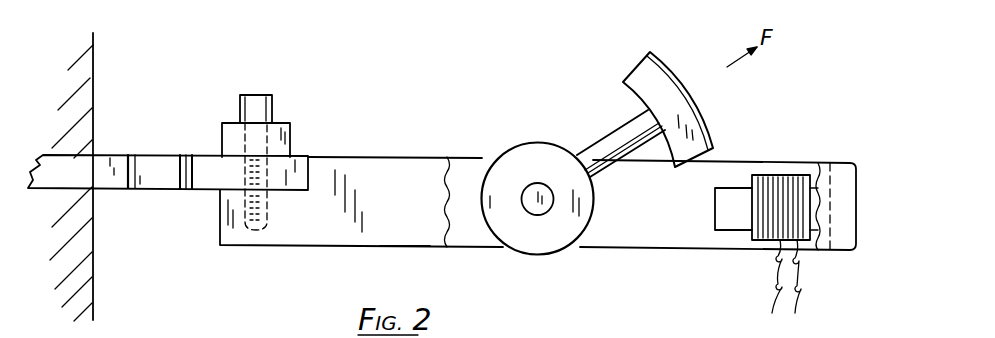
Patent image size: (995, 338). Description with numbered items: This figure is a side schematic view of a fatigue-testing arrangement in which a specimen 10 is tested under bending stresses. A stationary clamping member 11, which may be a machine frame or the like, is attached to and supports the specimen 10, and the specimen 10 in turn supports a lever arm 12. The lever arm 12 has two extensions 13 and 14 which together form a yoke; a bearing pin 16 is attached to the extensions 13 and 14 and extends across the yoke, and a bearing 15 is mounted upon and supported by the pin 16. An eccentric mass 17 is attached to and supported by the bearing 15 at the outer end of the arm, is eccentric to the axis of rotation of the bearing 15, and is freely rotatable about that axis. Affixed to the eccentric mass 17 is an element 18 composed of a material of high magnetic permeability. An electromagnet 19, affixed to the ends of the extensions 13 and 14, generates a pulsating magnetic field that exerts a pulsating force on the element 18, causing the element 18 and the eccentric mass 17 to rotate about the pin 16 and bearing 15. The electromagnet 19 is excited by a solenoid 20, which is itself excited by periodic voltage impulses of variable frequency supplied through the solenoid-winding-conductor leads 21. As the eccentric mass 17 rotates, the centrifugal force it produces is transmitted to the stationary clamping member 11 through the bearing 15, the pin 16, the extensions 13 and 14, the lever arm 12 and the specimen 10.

The specimen 10 is at (166, 159).
The stationary clamping member 11 is at (88, 95).
The lever arm 12 is at (389, 175).
The extension 13 is at (470, 237).
The extension 14 is at (403, 235).
The bearing 15 is at (537, 150).
The bearing pin 16 is at (535, 208).
The eccentric mass 17 is at (635, 68).
The element of high magnetic permeability 18 is at (698, 113).
The electromagnet 19 is at (852, 217).
The solenoid 20 is at (778, 180).
The solenoid-winding-conductor leads 21 is at (783, 289).